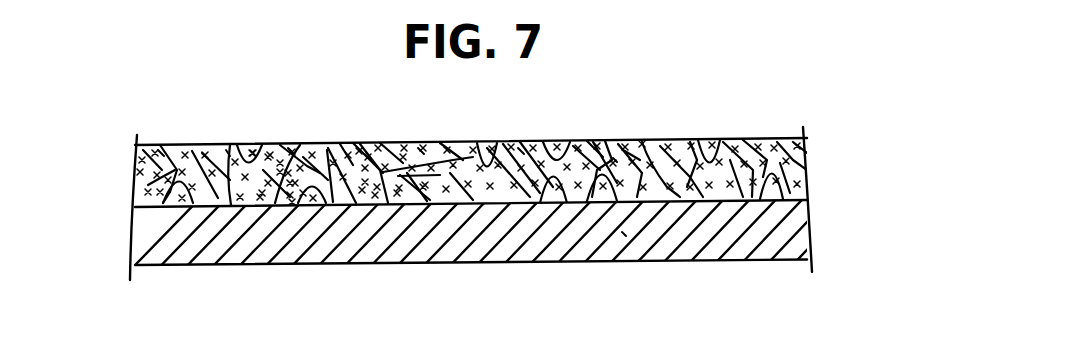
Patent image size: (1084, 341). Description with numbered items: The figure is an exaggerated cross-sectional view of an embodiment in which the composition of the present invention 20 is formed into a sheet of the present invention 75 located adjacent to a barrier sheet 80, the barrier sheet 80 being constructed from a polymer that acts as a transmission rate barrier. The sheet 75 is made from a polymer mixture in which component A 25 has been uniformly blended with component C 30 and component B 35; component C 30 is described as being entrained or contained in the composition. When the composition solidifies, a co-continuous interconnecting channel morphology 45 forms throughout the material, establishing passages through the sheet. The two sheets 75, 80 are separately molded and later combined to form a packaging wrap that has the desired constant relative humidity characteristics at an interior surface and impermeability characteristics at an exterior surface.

The composition of the present invention 20 is at (795, 124).
The component A 25 is at (160, 150).
The component C 30 is at (290, 148).
The component B 35 is at (420, 148).
The co-continuous interconnecting channel morphology 45 is at (228, 150).
The sheet of the present invention 75 is at (842, 158).
The barrier sheet 80 is at (845, 238).